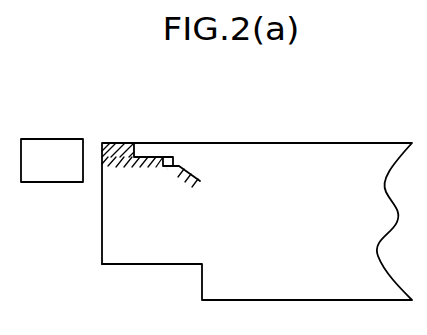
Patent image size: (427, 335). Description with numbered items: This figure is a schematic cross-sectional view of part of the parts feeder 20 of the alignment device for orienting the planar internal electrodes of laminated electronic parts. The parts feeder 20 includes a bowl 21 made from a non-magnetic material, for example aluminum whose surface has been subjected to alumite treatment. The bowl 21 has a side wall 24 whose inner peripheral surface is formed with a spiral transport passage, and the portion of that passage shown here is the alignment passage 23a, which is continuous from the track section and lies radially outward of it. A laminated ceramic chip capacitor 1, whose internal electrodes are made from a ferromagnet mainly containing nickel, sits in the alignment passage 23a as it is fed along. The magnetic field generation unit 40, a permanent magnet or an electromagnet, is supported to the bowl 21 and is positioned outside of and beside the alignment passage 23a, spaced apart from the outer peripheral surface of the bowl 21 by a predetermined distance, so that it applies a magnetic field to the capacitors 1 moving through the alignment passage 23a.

The laminated ceramic chip capacitor 1 is at (170, 157).
The parts feeder 20 is at (304, 143).
The bowl 21 is at (118, 264).
The alignment passage 23a is at (166, 167).
The side wall 24 is at (115, 148).
The magnetic field generation unit 40 is at (46, 138).